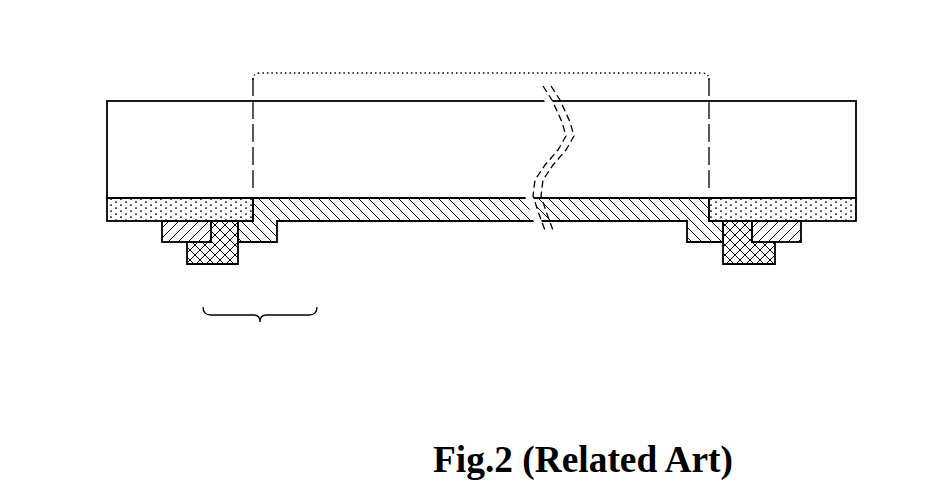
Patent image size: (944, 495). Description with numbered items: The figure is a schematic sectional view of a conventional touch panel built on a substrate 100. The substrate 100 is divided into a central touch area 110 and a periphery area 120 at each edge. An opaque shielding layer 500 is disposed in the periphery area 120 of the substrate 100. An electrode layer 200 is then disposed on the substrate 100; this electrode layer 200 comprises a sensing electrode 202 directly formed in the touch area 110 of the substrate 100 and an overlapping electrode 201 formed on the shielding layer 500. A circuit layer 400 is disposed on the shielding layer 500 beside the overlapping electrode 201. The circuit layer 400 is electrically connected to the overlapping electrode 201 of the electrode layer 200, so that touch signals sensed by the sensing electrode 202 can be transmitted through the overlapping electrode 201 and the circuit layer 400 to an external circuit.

The substrate 100 is at (107, 151).
The touch area 110 is at (487, 73).
The periphery area 120 is at (489, 111).
The electrode layer 200 is at (260, 329).
The overlapping electrode 201 is at (224, 264).
The sensing electrode 202 is at (321, 222).
The circuit layer 400 is at (161, 233).
The opaque shielding layer 500 is at (107, 210).